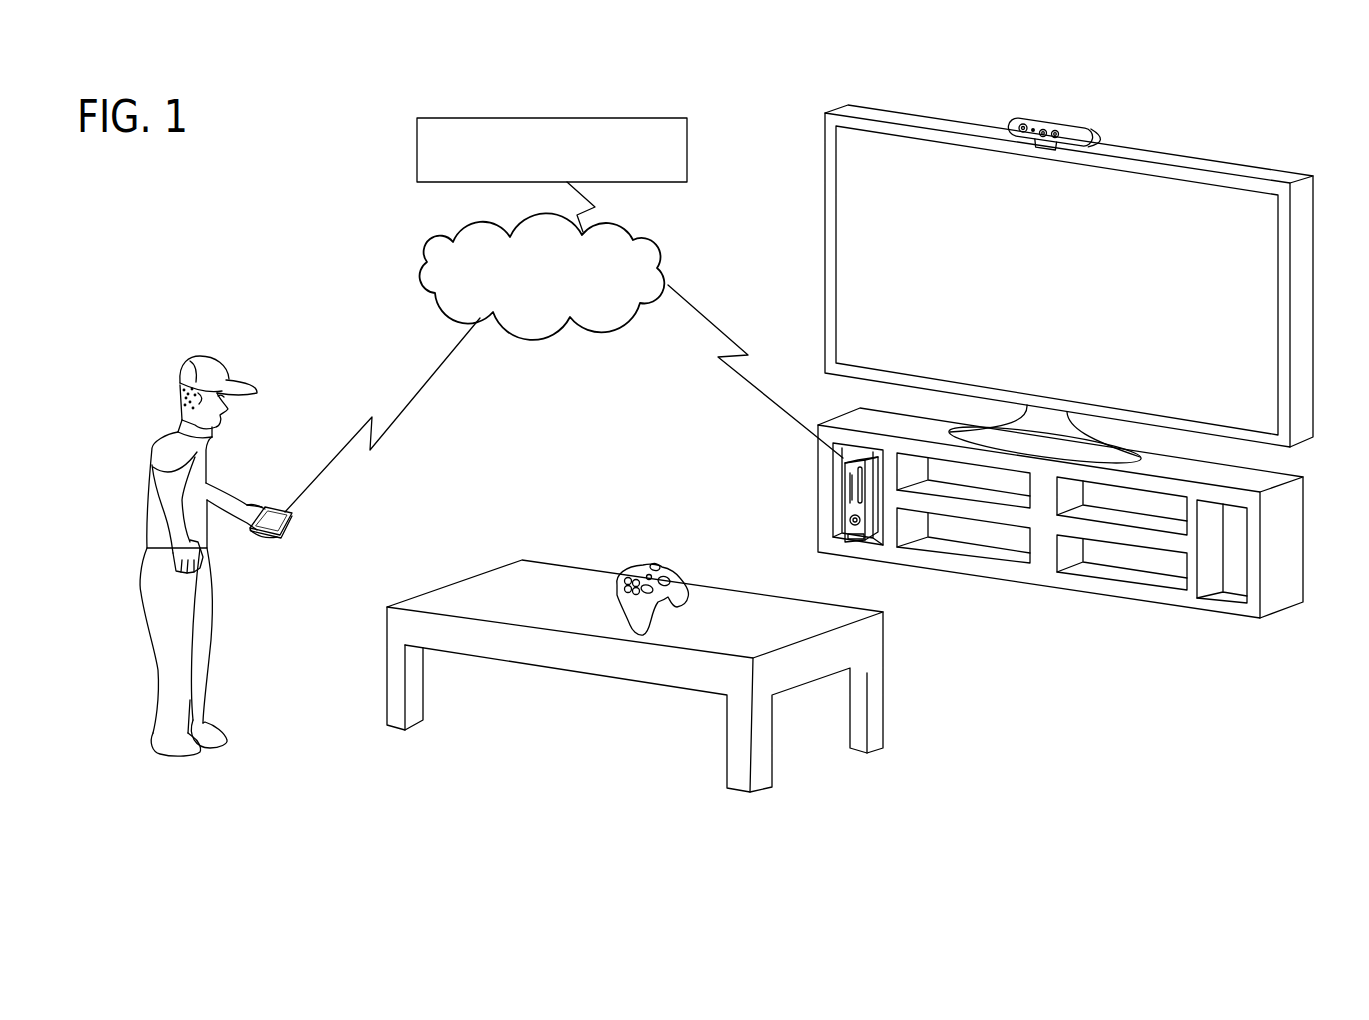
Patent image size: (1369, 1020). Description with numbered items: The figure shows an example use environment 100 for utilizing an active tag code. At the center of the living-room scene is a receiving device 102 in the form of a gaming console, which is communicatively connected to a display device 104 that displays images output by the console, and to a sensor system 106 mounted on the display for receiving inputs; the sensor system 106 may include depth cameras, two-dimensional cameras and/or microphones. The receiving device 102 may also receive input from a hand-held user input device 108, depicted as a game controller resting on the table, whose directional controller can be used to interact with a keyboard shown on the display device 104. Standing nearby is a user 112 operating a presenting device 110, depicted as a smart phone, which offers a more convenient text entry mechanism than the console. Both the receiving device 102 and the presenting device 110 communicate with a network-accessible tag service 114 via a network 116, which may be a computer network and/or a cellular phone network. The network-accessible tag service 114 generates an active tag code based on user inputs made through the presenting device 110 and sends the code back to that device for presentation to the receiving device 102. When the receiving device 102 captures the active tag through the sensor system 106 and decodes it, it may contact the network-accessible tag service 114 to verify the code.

The use environment 100 is at (323, 138).
The receiving device 102 is at (857, 544).
The display device 104 is at (1237, 129).
The sensor system 106 is at (1067, 125).
The hand-held user input device 108 is at (670, 577).
The presenting device 110 is at (286, 516).
The user 112 is at (172, 428).
The network-accessible tag service 114 is at (652, 173).
The network 116 is at (618, 283).